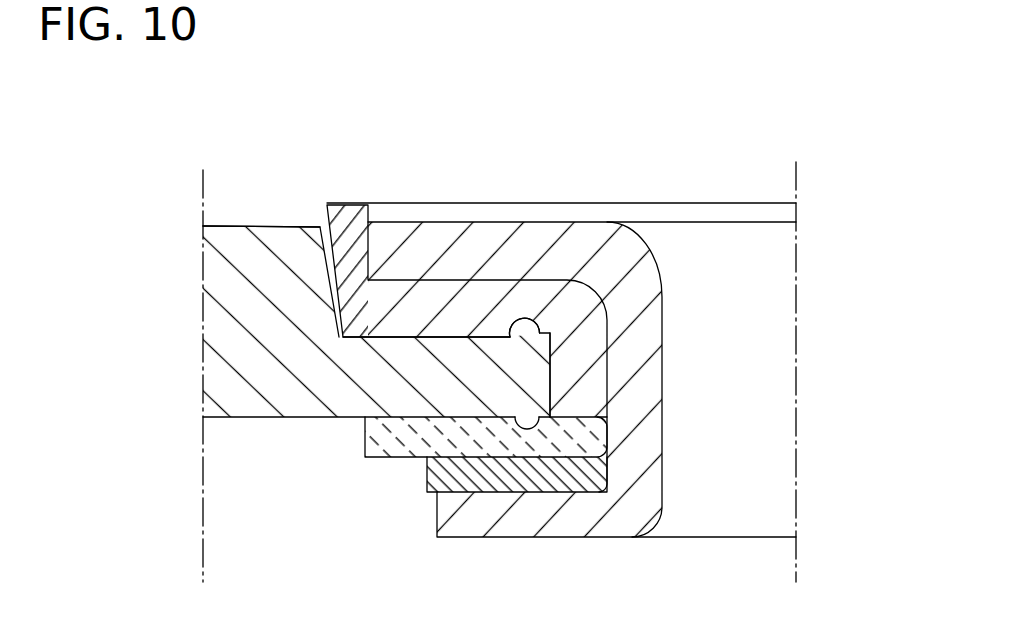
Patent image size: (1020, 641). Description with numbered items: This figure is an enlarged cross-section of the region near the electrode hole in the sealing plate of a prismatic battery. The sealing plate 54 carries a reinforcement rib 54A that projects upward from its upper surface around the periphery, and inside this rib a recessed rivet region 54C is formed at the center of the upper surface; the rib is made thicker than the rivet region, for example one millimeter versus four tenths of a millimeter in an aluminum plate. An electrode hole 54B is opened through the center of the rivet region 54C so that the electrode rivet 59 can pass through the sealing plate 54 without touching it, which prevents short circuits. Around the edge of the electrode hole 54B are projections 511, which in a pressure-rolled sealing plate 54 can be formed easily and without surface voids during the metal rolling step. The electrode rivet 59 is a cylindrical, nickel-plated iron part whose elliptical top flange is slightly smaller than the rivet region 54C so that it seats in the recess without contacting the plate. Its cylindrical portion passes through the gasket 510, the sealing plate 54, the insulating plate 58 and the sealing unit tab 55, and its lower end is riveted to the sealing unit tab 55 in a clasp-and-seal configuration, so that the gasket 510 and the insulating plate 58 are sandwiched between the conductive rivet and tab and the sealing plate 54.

The sealing plate 54 is at (287, 397).
The reinforcement rib 54A is at (287, 207).
The electrode hole 54B is at (560, 384).
The rivet region 54C is at (443, 326).
The sealing unit tab 55 is at (428, 480).
The insulating plate 58 is at (364, 440).
The electrode rivet 59 is at (540, 237).
The gasket 510 is at (353, 212).
The projections 511 is at (538, 312).